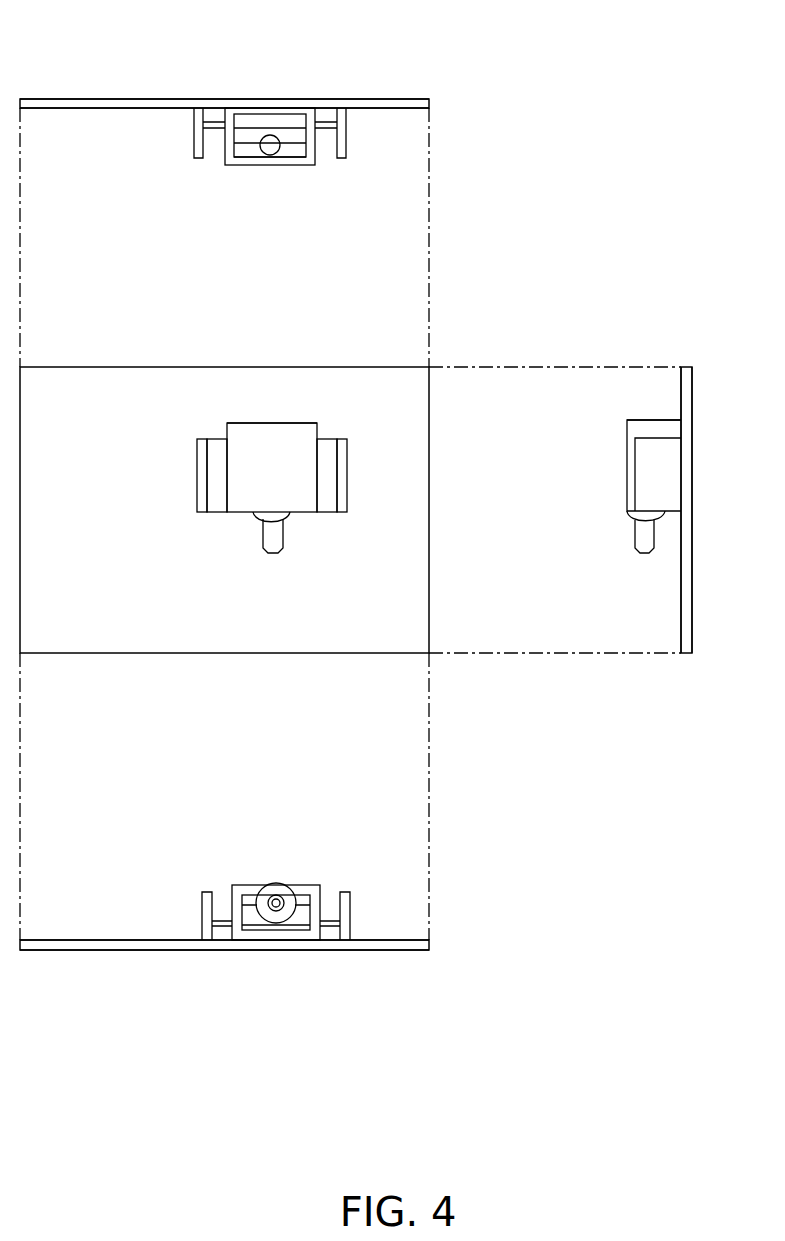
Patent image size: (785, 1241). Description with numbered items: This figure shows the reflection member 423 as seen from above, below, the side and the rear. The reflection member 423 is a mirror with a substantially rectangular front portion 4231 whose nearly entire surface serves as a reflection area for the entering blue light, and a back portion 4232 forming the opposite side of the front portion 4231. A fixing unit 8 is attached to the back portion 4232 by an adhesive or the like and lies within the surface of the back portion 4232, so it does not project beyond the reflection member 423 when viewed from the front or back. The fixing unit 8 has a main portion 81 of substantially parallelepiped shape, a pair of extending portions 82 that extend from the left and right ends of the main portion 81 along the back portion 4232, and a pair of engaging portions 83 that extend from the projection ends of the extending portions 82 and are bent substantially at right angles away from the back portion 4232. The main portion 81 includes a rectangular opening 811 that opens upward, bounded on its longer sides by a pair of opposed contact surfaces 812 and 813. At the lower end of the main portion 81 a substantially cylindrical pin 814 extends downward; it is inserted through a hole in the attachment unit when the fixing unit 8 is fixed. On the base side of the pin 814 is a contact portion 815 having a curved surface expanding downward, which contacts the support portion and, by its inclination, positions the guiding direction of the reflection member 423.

The fixing unit 8 is at (200, 185).
The main portion 81 is at (280, 113).
The extending portions 82 is at (203, 113).
The engaging portions 83 is at (194, 147).
The opening 811 is at (289, 157).
The contact surface 812 is at (240, 120).
The contact surface 813 is at (245, 157).
The pin 814 is at (277, 540).
The contact portion 815 is at (255, 515).
The reflection member 423 is at (410, 102).
The front portion 4231 is at (365, 100).
The back portion 4232 is at (70, 110).